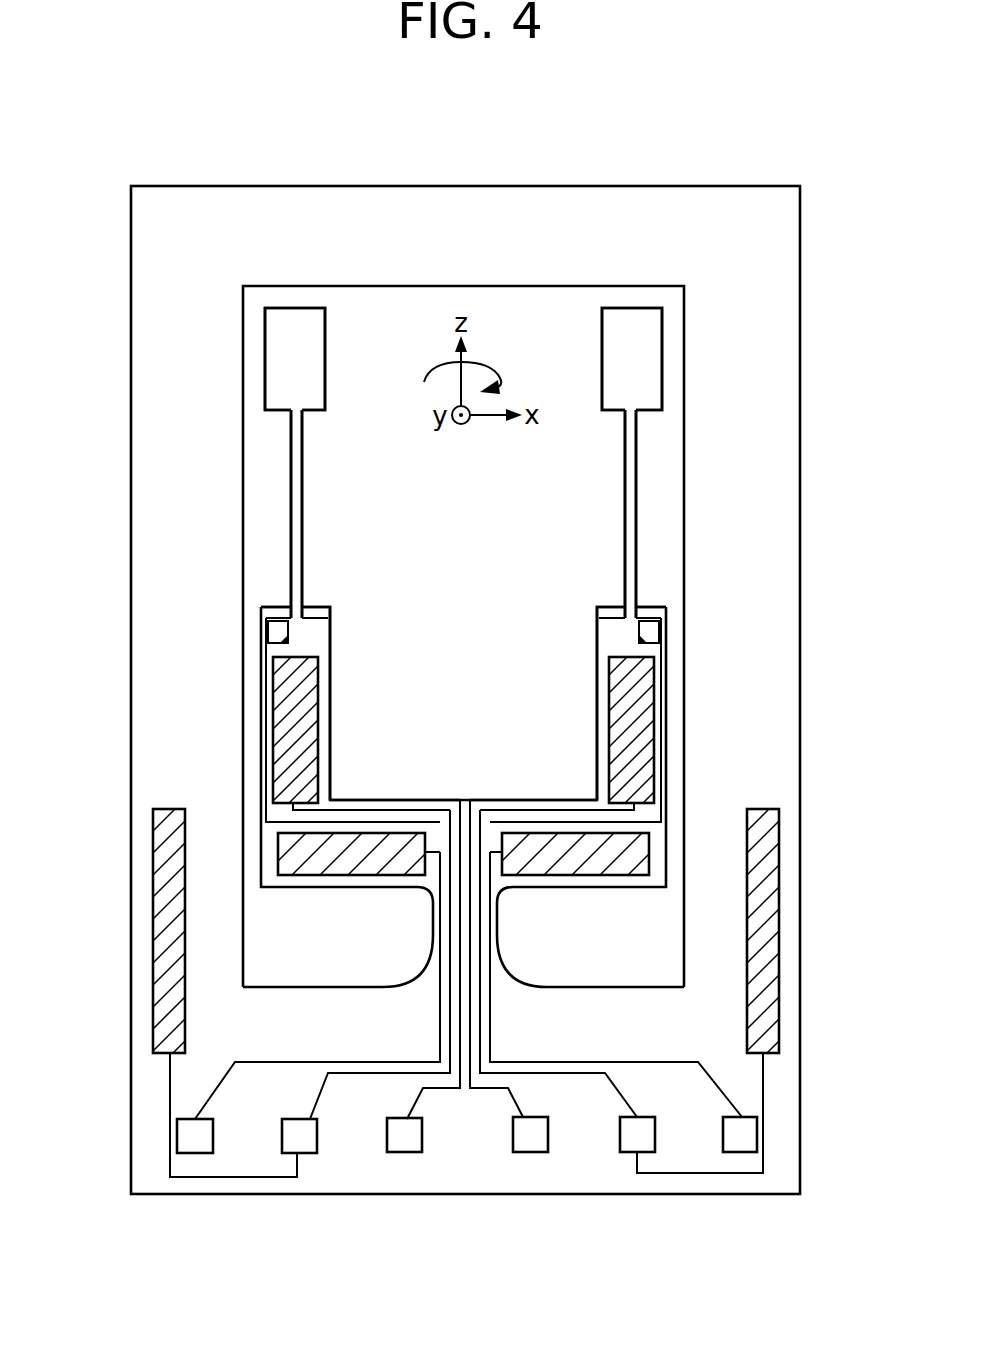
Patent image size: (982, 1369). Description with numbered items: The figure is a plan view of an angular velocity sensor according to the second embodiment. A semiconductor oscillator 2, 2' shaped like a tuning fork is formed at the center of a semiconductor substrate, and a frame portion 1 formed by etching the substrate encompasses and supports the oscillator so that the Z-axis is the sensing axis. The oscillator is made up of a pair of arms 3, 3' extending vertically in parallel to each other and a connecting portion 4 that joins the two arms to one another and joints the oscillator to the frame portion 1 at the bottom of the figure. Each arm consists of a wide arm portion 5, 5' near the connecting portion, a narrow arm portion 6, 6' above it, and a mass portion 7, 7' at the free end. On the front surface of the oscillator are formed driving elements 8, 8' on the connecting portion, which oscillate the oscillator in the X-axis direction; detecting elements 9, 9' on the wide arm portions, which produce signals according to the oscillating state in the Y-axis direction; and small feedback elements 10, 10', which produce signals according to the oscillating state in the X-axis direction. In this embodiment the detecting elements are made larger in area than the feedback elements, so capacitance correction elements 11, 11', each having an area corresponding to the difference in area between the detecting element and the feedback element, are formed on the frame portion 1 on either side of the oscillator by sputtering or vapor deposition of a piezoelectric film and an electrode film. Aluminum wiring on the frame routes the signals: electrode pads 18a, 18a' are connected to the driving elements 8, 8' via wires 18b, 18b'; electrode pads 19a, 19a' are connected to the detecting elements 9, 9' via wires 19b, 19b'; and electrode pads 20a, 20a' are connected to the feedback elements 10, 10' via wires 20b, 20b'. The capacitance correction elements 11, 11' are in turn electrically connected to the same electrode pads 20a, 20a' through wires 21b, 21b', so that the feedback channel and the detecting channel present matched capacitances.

The frame portion 1 is at (562, 212).
The semiconductor oscillator 2 is at (333, 463).
The semiconductor oscillator 2' is at (591, 463).
The arm 3 is at (330, 703).
The arm 3' is at (593, 703).
The connecting portion 4 is at (587, 888).
The wide arm portion 5 is at (360, 714).
The wide arm portion 5' is at (568, 714).
The narrow arm portion 6 is at (334, 514).
The narrow arm portion 6' is at (589, 514).
The mass portion 7 is at (321, 359).
The mass portion 7' is at (598, 359).
The driving element 8 is at (321, 854).
The driving element 8' is at (610, 854).
The detecting element 9 is at (361, 733).
The detecting element 9' is at (567, 733).
The feedback element 10 is at (337, 621).
The feedback element 10' is at (582, 621).
The capacitance correction element 11 is at (129, 931).
The capacitance correction element 11' is at (802, 931).
The electrode pad 18a is at (205, 1207).
The electrode pad 18a' is at (740, 1206).
The wire 18b is at (280, 1054).
The wire 18b' is at (658, 1054).
The electrode pad 19a is at (415, 1207).
The electrode pad 19a' is at (525, 1206).
The wire 19b is at (395, 1028).
The wire 19b' is at (540, 1028).
The electrode pad 20a is at (310, 1207).
The electrode pad 20a' is at (632, 1206).
The wire 20b is at (338, 1033).
The wire 20b' is at (600, 1033).
The wire 21b is at (176, 1115).
The wire 21b' is at (757, 1113).